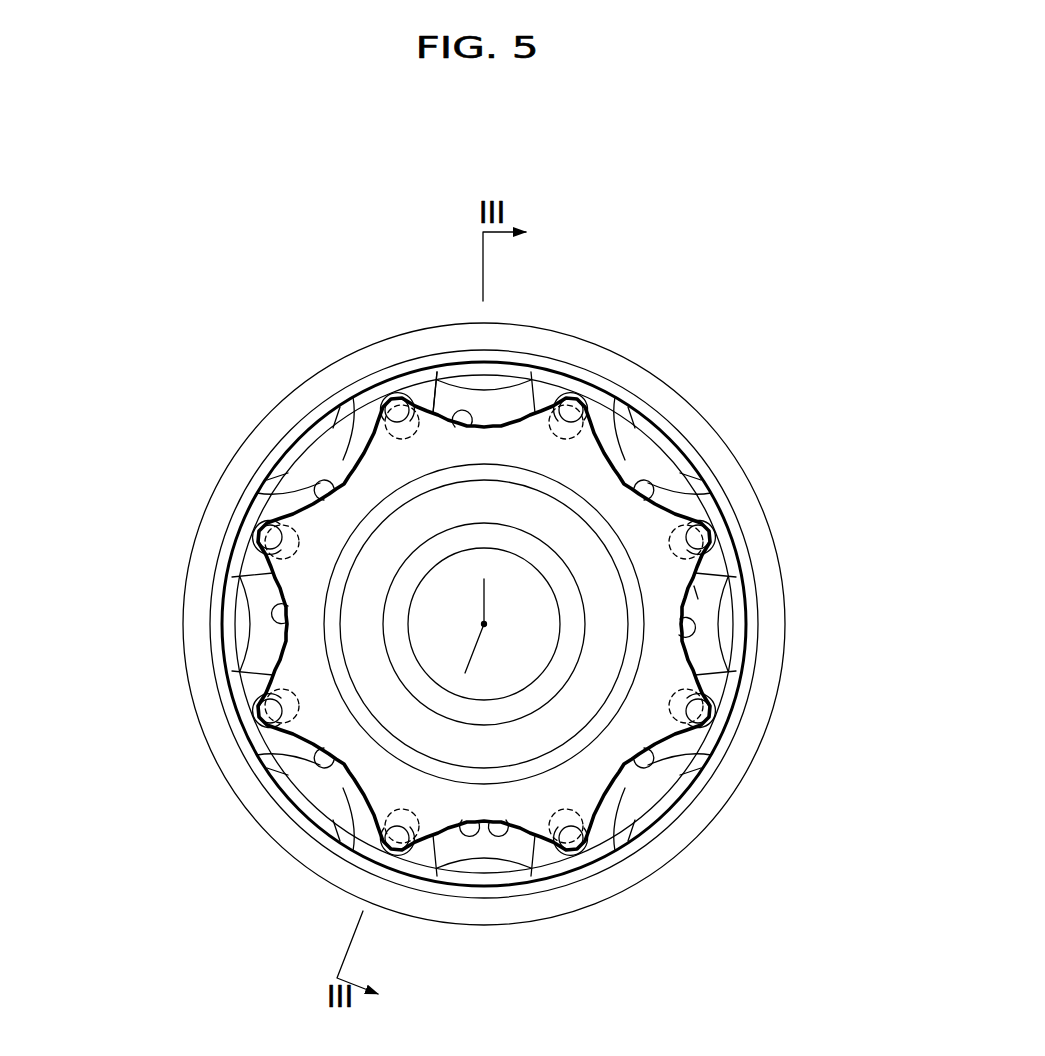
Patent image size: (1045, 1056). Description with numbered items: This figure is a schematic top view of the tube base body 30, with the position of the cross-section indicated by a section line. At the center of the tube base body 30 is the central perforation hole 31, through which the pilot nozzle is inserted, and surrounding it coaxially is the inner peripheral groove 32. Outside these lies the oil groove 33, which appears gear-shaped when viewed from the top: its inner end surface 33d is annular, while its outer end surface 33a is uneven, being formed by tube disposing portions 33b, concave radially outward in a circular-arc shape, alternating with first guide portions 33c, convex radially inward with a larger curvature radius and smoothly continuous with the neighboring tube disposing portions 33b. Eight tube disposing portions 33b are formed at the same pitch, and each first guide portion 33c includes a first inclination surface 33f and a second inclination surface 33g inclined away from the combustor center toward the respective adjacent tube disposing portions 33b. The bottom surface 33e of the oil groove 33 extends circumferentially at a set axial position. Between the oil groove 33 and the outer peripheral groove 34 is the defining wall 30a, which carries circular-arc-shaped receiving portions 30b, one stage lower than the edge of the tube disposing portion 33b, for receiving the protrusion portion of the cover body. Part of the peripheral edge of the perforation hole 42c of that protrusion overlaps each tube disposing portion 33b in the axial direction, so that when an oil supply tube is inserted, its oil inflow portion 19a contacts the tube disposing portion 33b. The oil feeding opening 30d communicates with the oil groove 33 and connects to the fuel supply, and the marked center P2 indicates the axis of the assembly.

The tube base body 30 is at (720, 205).
The defining wall 30a is at (398, 387).
The receiving portion 30b is at (375, 404).
The oil feeding opening 30d is at (507, 388).
The central perforation hole 31 is at (513, 642).
The inner peripheral groove 32 is at (593, 642).
The oil groove 33 is at (644, 526).
The outer end surface 33a is at (486, 623).
The tube disposing portion 33b is at (420, 398).
The first guide portion 33c is at (466, 426).
The inner end surface 33d is at (288, 604).
The bottom surface 33e is at (700, 590).
The first inclination surface 33f is at (476, 824).
The second inclination surface 33g is at (503, 824).
The outer peripheral groove 34 is at (760, 668).
The perforation hole 42c is at (590, 420).
The oil inflow portion 19a is at (506, 673).
The rotation center P2 is at (486, 623).